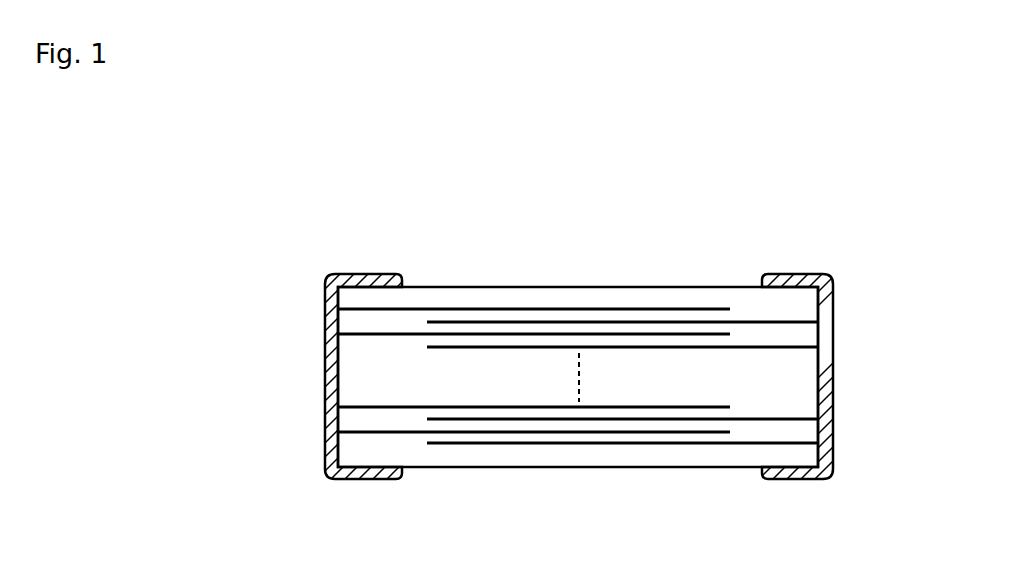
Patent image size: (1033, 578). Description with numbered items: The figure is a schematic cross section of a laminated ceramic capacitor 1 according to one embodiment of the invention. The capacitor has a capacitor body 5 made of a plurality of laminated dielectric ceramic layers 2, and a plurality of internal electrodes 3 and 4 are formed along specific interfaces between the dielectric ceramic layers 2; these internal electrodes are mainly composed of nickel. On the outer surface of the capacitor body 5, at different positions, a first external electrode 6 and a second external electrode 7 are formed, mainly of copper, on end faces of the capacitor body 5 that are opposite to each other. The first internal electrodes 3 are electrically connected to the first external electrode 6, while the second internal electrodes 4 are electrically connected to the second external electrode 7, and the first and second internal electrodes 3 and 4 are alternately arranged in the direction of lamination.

The laminated ceramic capacitor 1 is at (338, 160).
The dielectric ceramic layers 2 is at (607, 328).
The first internal electrodes 3 is at (495, 333).
The second internal electrodes 4 is at (663, 421).
The capacitor body 5 is at (703, 280).
The first external electrode 6 is at (330, 375).
The second external electrode 7 is at (832, 378).